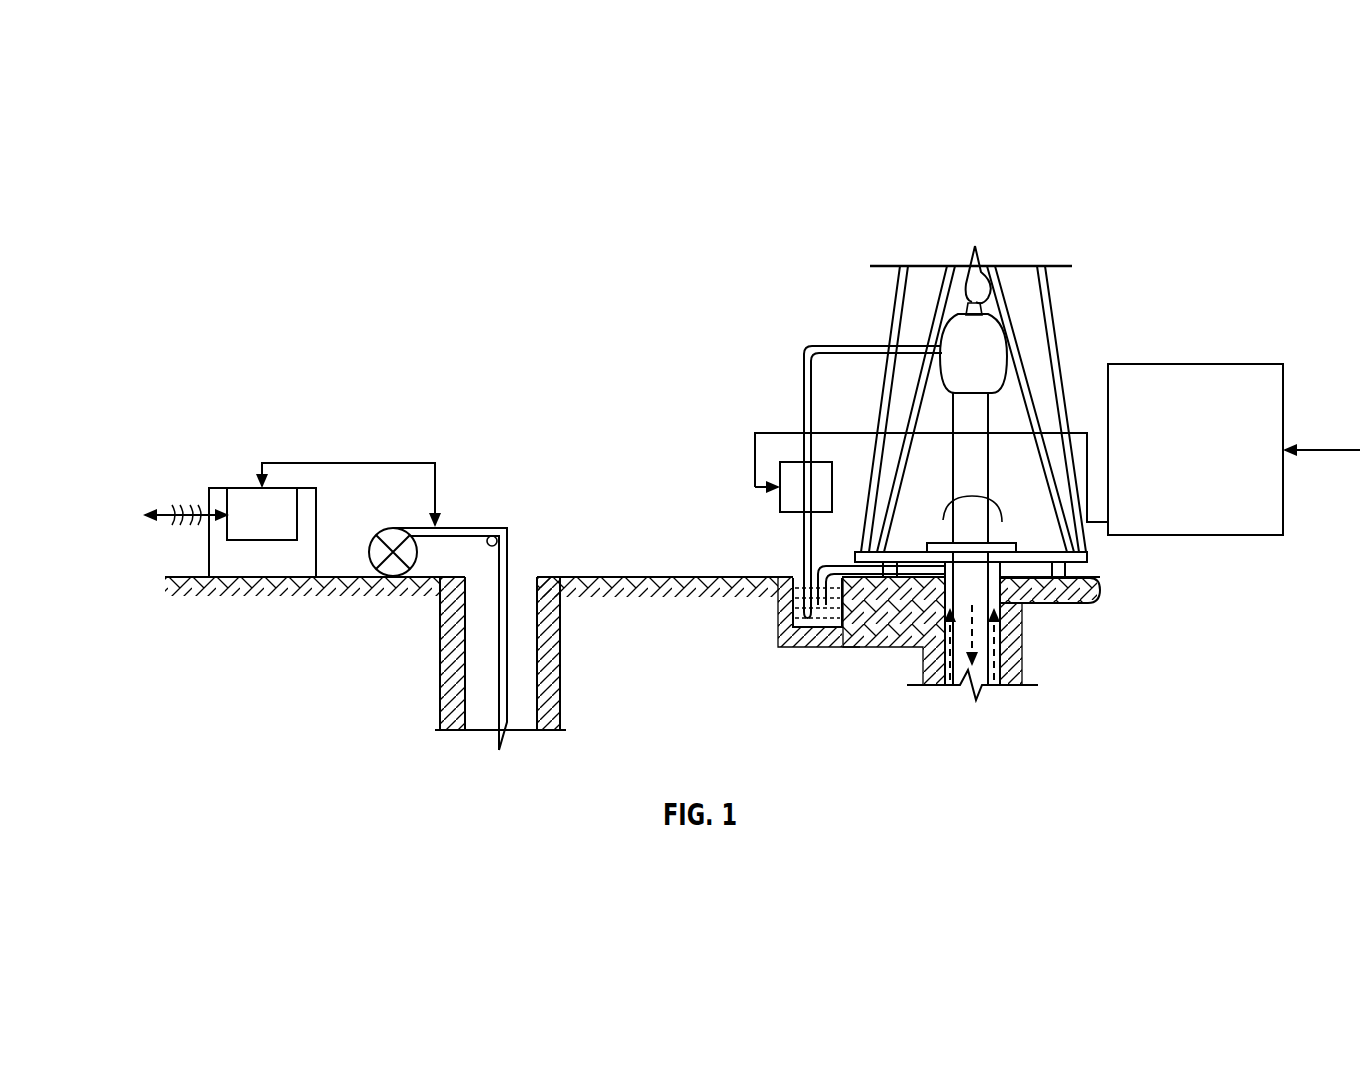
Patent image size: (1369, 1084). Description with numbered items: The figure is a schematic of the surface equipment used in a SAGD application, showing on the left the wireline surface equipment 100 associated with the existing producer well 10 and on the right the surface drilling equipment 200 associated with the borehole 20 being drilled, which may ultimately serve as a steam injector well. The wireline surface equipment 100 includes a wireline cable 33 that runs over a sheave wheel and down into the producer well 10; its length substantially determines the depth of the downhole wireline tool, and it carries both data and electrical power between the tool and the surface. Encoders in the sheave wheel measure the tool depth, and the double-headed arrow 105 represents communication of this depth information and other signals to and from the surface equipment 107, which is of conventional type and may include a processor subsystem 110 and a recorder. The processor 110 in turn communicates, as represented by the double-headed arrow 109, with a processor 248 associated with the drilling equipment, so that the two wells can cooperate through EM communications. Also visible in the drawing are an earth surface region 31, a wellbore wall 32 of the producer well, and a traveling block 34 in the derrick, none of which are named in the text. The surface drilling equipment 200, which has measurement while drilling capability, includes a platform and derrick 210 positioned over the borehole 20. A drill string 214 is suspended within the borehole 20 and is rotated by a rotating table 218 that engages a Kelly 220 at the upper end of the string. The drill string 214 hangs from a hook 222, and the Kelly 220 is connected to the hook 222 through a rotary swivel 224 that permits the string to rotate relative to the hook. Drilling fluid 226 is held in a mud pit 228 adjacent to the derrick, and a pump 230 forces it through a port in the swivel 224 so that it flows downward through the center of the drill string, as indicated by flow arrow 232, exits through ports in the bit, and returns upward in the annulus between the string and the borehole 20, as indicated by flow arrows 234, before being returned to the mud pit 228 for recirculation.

The wireline surface equipment 100 is at (477, 362).
The double-headed arrow 105 is at (354, 463).
The surface equipment 107 is at (316, 515).
The double-headed arrow 109 is at (165, 511).
The processor subsystem 110 is at (263, 538).
The producer well 10 is at (543, 656).
The earth surface 31 is at (630, 577).
The wellbore 32 is at (523, 583).
The wireline cable 33 is at (490, 527).
The traveling block 34 is at (1012, 356).
The surface drilling equipment 200 is at (832, 297).
The platform and derrick 210 is at (1102, 559).
The drill string 214 is at (963, 673).
The rotating table 218 is at (992, 526).
The Kelly 220 is at (977, 477).
The hook 222 is at (975, 268).
The rotary swivel 224 is at (950, 394).
The drilling fluid 226 is at (808, 632).
The mud pit 228 is at (788, 614).
The pump 230 is at (790, 512).
The flow arrow 232 is at (948, 616).
The flow arrows 234 is at (996, 636).
The processor 248 is at (90, 545).
The borehole 20 is at (1007, 666).